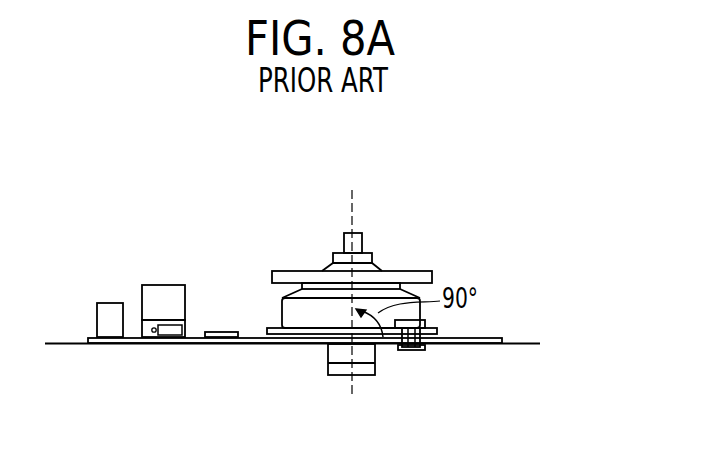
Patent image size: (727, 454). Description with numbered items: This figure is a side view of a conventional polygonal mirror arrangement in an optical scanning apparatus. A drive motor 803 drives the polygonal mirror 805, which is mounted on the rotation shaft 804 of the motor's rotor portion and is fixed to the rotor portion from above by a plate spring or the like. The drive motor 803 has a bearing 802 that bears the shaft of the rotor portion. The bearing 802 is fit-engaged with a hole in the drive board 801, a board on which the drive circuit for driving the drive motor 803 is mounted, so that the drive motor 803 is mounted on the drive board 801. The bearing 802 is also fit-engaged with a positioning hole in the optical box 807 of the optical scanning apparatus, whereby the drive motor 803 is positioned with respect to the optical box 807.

The drive board 801 is at (492, 337).
The bearing 802 is at (376, 355).
The drive motor 803 is at (281, 317).
The rotation shaft 804 is at (343, 240).
The polygonal mirror 805 is at (465, 266).
The optical box 807 is at (530, 347).